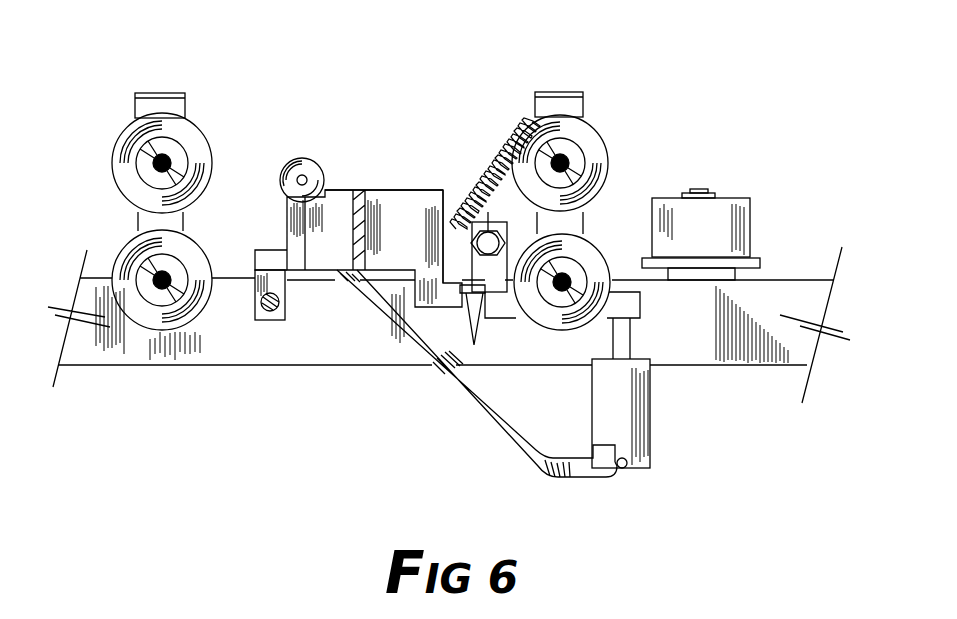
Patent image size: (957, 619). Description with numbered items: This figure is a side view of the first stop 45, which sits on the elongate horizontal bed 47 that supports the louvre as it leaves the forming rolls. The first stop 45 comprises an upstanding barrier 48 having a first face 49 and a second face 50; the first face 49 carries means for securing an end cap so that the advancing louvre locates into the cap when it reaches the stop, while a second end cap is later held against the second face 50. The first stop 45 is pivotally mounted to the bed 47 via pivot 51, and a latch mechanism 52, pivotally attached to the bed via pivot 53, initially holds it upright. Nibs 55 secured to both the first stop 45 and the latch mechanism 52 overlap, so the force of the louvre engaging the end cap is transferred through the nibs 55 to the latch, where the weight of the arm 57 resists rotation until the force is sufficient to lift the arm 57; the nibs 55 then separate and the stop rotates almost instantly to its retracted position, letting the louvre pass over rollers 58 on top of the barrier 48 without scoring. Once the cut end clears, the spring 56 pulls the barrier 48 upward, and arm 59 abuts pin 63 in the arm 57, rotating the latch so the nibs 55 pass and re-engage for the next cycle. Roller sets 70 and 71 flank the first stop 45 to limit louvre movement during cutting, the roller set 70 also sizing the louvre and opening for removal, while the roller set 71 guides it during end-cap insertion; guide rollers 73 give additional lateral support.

The first stop 45 is at (317, 137).
The bed 47 is at (782, 280).
The upstanding barrier 48 is at (337, 187).
The first face 49 is at (287, 207).
The second face 50 is at (445, 227).
The pivot 51 is at (270, 315).
The latch mechanism 52 is at (503, 318).
The pivot 53 is at (488, 190).
The nibs 55 is at (470, 326).
The spring 56 is at (517, 130).
The arm 57 is at (640, 400).
The rollers 58 is at (293, 160).
The arm 59 is at (510, 432).
The pin 63 is at (626, 468).
The roller set 70 is at (136, 75).
The roller set 71 is at (603, 120).
The guide rollers 73 is at (750, 223).